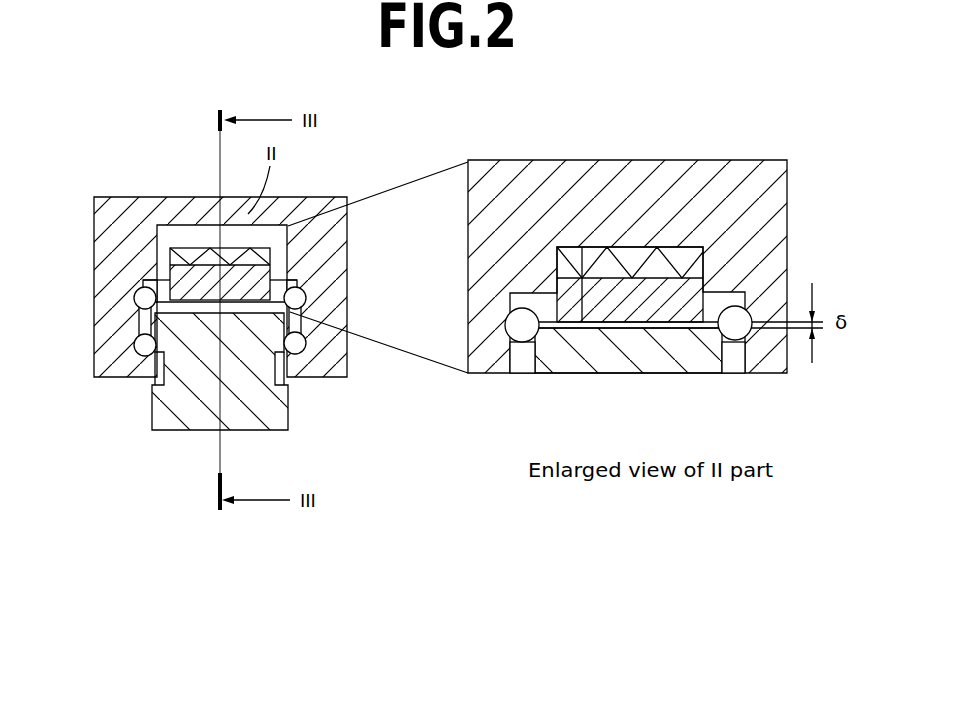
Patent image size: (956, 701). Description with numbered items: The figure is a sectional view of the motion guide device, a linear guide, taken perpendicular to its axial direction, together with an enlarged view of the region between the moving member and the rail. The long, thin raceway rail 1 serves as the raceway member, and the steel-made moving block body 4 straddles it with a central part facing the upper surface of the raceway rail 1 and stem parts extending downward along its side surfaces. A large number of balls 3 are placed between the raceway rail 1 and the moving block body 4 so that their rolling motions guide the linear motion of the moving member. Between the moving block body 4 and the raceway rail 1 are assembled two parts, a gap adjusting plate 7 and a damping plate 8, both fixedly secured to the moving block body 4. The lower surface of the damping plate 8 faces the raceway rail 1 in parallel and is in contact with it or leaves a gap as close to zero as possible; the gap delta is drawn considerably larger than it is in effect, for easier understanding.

The raceway rail 1 is at (173, 415).
The balls 3 is at (135, 358).
The moving block body 4 is at (297, 220).
The gap adjusting plate 7 is at (588, 350).
The damping plate 8 is at (693, 315).